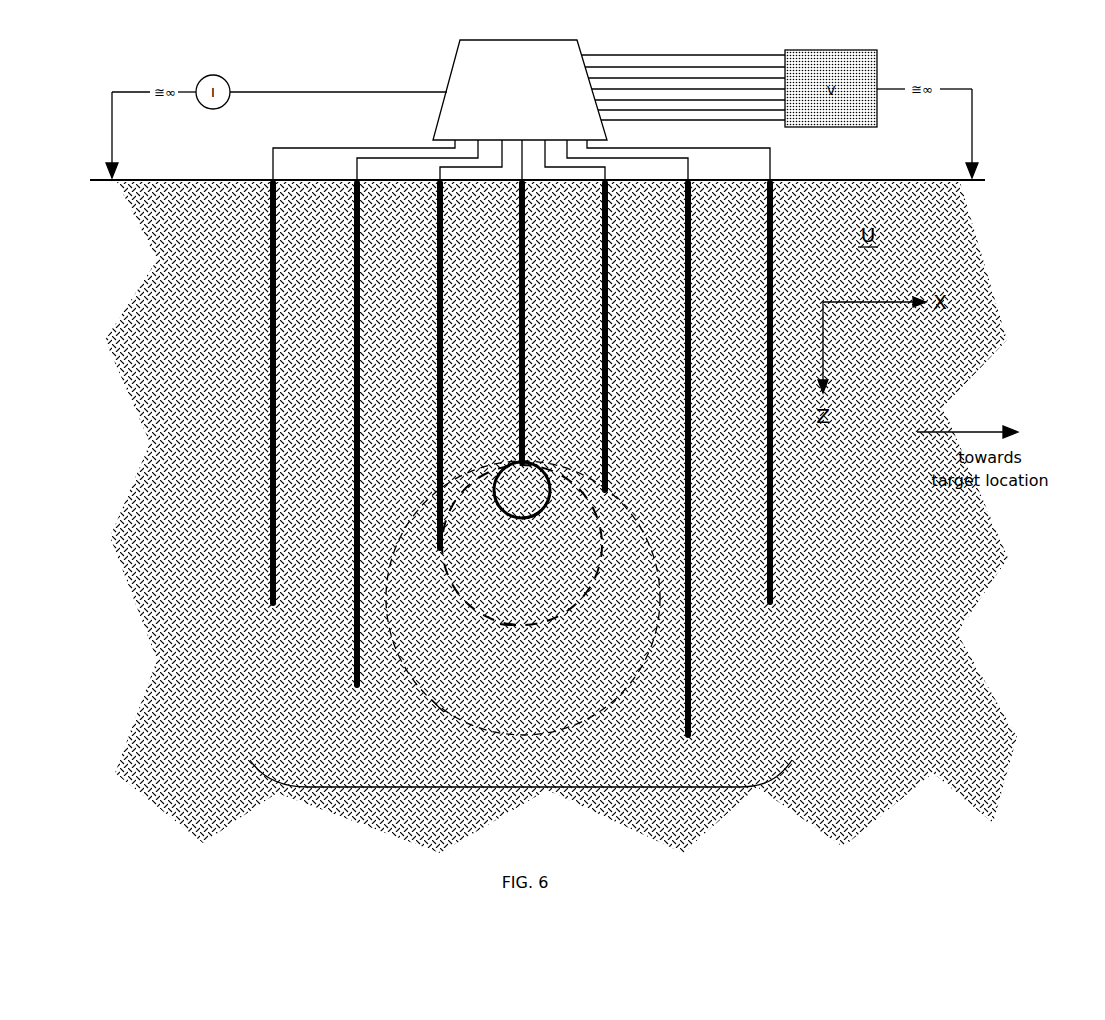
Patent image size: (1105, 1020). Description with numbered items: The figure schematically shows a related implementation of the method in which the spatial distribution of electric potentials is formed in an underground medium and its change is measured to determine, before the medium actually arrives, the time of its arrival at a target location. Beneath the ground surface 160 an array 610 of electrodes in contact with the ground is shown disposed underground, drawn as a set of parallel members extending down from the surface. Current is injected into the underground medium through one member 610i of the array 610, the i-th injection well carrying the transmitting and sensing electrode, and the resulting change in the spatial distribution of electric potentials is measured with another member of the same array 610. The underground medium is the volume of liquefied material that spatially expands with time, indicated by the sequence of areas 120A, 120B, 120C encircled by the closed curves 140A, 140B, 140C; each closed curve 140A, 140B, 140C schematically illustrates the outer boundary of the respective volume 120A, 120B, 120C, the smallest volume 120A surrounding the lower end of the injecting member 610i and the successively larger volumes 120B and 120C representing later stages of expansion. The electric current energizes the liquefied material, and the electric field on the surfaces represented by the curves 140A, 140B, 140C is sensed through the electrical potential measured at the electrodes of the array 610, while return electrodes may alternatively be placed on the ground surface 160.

The ground surface 160 is at (238, 166).
The liquefied material volume 120A is at (510, 480).
The liquefied material volume 120B is at (558, 570).
The liquefied material volume 120C is at (577, 692).
The closed curve 140A is at (537, 528).
The closed curve 140B is at (507, 643).
The closed curve 140C is at (436, 724).
The array of electrodes 610 is at (523, 787).
The member of the array of electrodes 610i is at (790, 570).